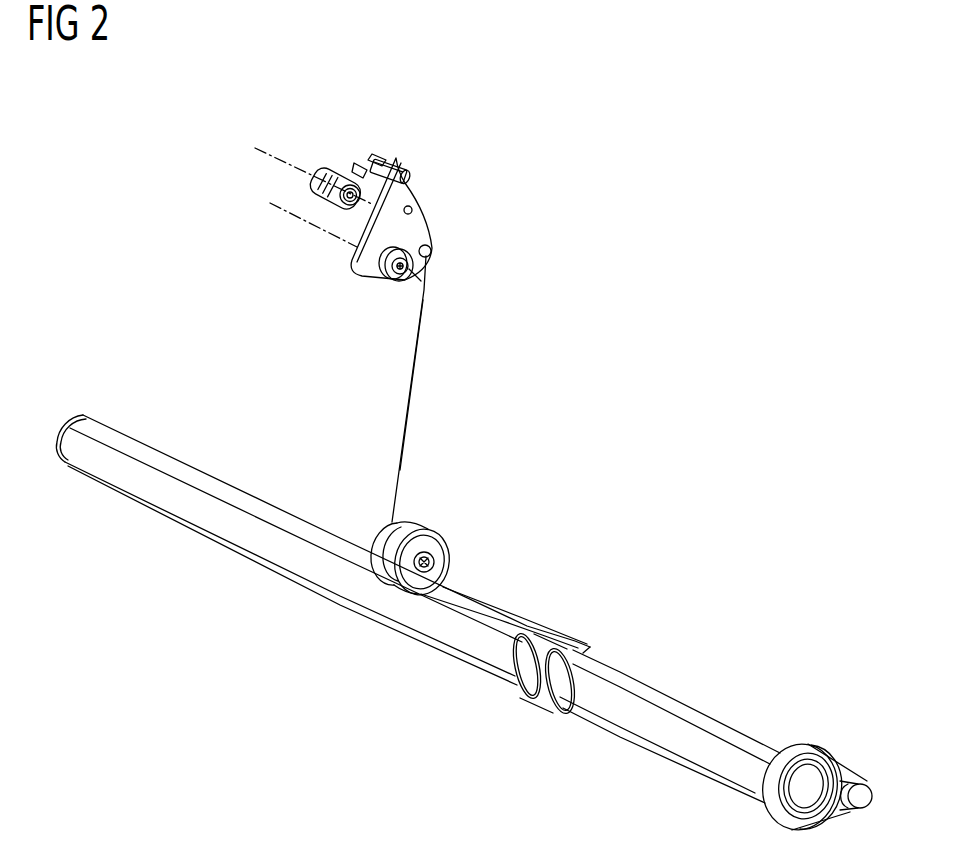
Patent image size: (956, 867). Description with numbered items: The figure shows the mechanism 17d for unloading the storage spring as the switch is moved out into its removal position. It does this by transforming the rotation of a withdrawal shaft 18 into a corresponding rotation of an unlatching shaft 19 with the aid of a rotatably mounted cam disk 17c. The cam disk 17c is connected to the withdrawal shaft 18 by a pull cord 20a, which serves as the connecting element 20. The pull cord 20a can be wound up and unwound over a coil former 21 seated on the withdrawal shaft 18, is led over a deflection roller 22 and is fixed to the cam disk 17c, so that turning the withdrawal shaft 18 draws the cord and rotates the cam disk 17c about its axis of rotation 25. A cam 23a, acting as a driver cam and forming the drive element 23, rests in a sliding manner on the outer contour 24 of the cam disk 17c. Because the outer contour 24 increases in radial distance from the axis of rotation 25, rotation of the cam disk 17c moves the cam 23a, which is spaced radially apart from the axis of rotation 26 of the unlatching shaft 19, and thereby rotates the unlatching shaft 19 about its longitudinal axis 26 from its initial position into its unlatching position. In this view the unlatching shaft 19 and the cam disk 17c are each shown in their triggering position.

The cam disk 17c is at (416, 230).
The mechanism for unloading the storage spring 17d is at (751, 219).
The withdrawal shaft 18 is at (292, 564).
The unlatching shaft 19 is at (330, 170).
The connecting element 20 is at (431, 321).
The pull cord 20a is at (416, 377).
The coil former 21 is at (592, 648).
The deflection roller 22 is at (450, 553).
The drive element 23 is at (392, 152).
The cam 23a is at (397, 160).
The outer contour 24 is at (420, 206).
The axis of rotation 25 is at (300, 224).
The axis of rotation 26 is at (264, 160).